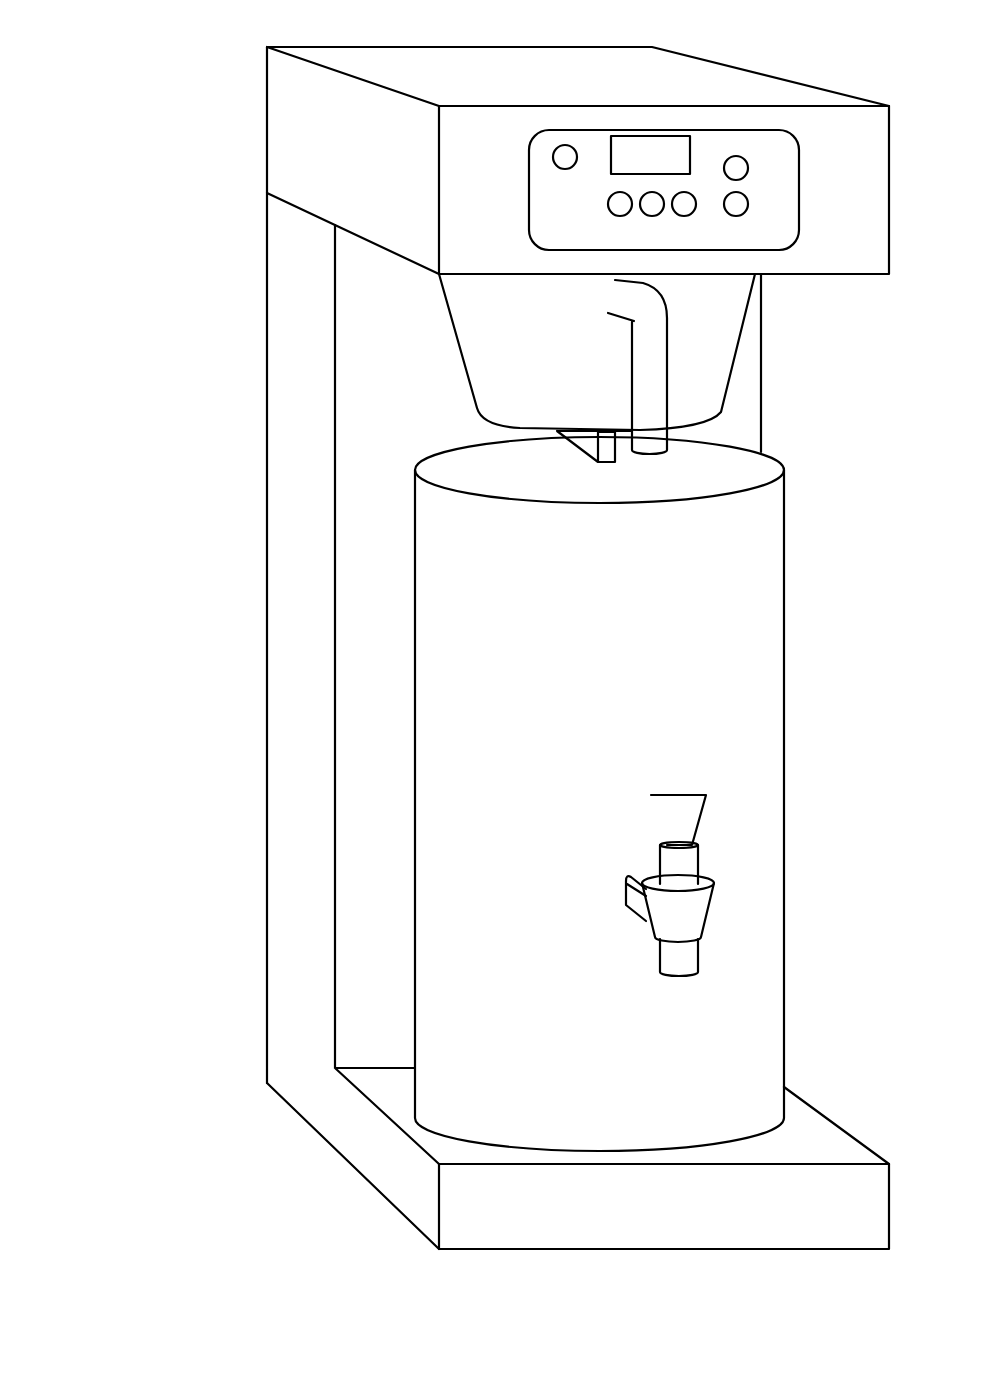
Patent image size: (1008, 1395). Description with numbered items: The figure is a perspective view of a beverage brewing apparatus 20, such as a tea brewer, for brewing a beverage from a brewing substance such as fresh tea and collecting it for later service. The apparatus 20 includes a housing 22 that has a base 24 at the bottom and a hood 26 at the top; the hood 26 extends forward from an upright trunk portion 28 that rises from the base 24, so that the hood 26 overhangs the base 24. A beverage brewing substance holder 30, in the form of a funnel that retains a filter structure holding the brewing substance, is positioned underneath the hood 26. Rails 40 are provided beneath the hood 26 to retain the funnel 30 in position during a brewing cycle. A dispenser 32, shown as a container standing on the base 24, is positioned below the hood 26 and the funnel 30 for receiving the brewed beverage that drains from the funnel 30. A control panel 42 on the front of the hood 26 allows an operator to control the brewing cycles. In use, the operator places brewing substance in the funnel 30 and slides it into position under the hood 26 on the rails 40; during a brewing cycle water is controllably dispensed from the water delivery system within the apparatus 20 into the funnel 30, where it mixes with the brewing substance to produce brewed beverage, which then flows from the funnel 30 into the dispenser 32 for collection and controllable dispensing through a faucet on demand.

The beverage brewing apparatus 20 is at (98, 222).
The housing 22 is at (226, 455).
The base 24 is at (368, 1137).
The hood 26 is at (388, 130).
The trunk portion 28 is at (297, 532).
The beverage brewing substance holder 30 is at (718, 346).
The dispenser 32 is at (750, 705).
The rails 40 is at (400, 257).
The control panel 42 is at (738, 144).